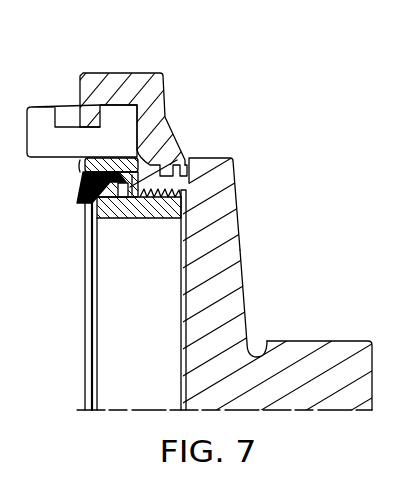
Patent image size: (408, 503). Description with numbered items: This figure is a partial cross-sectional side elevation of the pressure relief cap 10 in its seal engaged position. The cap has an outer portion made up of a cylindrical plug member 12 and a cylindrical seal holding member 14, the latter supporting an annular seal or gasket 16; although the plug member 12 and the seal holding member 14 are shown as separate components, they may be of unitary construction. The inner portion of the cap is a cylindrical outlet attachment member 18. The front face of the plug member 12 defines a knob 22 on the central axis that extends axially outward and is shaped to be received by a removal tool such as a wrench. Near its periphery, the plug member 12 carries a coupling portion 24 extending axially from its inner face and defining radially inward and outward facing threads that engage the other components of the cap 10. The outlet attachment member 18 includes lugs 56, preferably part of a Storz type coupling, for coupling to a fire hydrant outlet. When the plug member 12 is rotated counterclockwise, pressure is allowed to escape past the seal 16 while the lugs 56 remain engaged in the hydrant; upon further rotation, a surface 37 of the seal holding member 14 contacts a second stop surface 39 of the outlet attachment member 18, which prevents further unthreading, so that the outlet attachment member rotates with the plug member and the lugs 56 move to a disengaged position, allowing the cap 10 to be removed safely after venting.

The pressure relief cap 10 is at (183, 71).
The cylindrical plug member 12 is at (254, 286).
The cylindrical seal holding member 14 is at (136, 224).
The annular seal 16 is at (64, 193).
The cylindrical outlet attachment member 18 is at (100, 68).
The knob 22 is at (320, 340).
The coupling portion 24 is at (163, 184).
The surface 37 is at (82, 179).
The second stop surface 39 is at (146, 149).
The lugs 56 is at (48, 118).